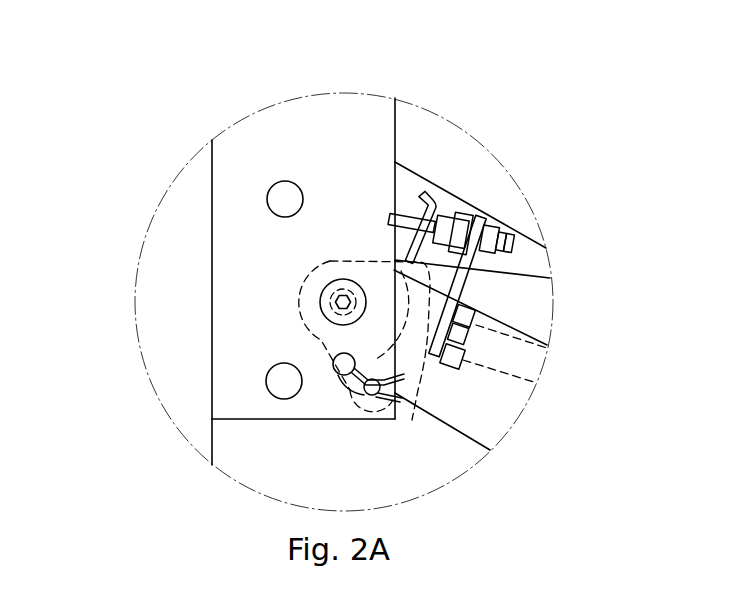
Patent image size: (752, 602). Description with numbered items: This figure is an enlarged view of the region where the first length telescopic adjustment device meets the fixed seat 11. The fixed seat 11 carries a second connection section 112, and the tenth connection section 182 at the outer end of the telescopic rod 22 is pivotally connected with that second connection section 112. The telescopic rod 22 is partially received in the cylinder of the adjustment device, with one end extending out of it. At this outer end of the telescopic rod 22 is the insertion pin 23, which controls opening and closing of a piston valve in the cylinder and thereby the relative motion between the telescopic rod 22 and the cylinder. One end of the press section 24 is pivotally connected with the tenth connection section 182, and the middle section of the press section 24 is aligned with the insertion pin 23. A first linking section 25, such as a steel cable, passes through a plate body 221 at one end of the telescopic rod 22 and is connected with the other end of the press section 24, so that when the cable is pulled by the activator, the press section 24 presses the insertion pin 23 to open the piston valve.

The fixed seat 11 is at (369, 145).
The second connection section 112 is at (318, 302).
The tenth connection section 182 is at (320, 275).
The press section 24 is at (418, 300).
The telescopic rod 22 is at (507, 355).
The plate body 221 is at (482, 220).
The first linking section 25 is at (440, 200).
The insertion pin 23 is at (436, 322).